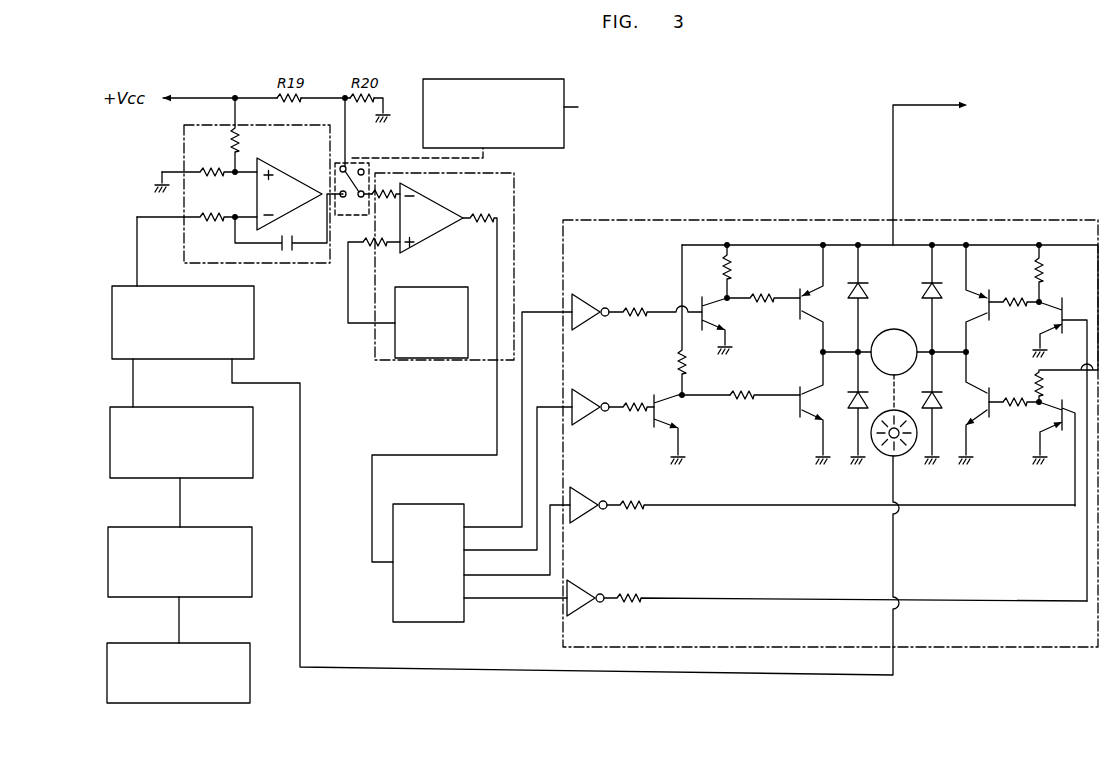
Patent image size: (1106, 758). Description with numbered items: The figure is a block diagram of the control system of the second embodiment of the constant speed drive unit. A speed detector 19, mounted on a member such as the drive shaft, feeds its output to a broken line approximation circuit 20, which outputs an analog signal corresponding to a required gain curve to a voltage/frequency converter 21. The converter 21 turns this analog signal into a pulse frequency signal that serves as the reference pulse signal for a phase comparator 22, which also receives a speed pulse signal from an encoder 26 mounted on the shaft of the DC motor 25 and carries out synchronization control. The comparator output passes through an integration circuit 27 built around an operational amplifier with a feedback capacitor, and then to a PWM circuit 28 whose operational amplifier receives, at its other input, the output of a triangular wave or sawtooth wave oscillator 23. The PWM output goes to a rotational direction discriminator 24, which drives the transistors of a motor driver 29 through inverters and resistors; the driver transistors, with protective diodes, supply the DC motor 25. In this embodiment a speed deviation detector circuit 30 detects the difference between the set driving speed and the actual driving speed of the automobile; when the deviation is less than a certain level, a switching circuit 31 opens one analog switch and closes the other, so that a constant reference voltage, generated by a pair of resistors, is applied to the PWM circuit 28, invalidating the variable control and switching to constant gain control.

The speed detector 19 is at (250, 683).
The broken line approximation circuit 20 is at (213, 598).
The voltage/frequency converter 21 is at (213, 479).
The phase comparator 22 is at (191, 360).
The triangular wave or sawtooth wave oscillator 23 is at (432, 359).
The rotational direction discriminator 24 is at (430, 622).
The DC motor 25 is at (894, 329).
The encoder 26 is at (875, 458).
The integration circuit 27 is at (291, 264).
The PWM circuit 28 is at (514, 193).
The motor driver 29 is at (643, 218).
The speed deviation detector circuit 30 is at (500, 79).
The switching circuit 31 is at (351, 168).